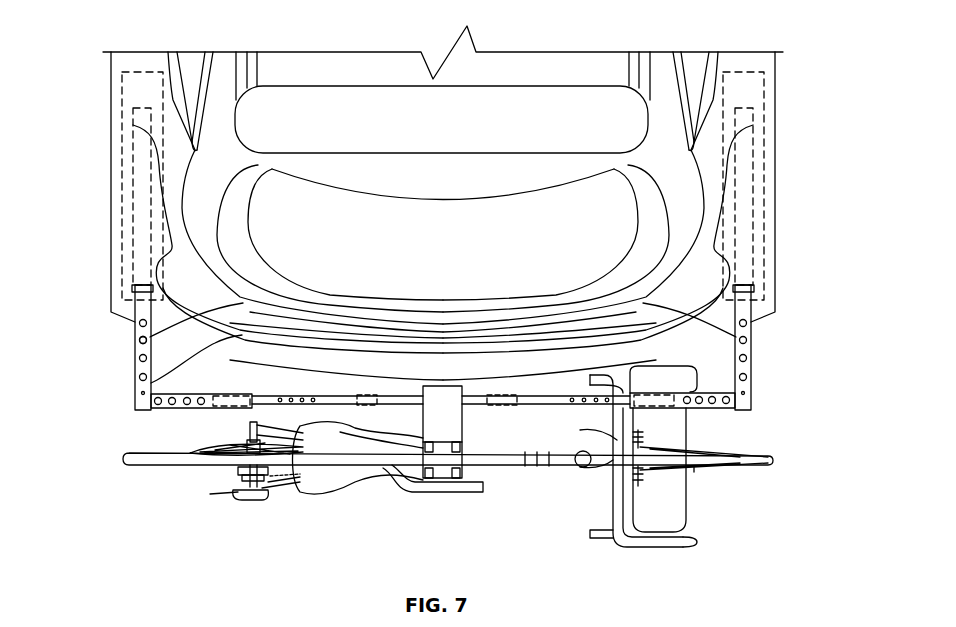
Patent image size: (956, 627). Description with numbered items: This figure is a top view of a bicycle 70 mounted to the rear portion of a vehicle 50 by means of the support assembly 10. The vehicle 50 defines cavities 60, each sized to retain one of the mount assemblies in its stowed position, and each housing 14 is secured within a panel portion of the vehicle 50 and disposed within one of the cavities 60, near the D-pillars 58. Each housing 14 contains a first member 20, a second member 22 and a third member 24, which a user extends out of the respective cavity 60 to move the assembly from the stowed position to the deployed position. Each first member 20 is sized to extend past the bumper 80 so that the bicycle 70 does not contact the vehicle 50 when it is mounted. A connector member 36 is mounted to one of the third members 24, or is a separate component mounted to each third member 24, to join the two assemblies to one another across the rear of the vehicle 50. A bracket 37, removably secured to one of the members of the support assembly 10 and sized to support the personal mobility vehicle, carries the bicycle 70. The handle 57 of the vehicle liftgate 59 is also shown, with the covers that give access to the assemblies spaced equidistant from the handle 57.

The support assembly 10 is at (757, 362).
The housing 14 is at (133, 183).
The first member 20 is at (140, 349).
The second member 22 is at (175, 396).
The third member 24 is at (291, 395).
The connector member 36 is at (495, 405).
The bracket 37 is at (452, 428).
The vehicle 50 is at (563, 60).
The handle 57 is at (443, 340).
The D-pillar 58 is at (207, 138).
The vehicle liftgate 59 is at (148, 337).
The cavity 60 is at (122, 148).
The bicycle 70 is at (728, 472).
The bumper 80 is at (134, 390).